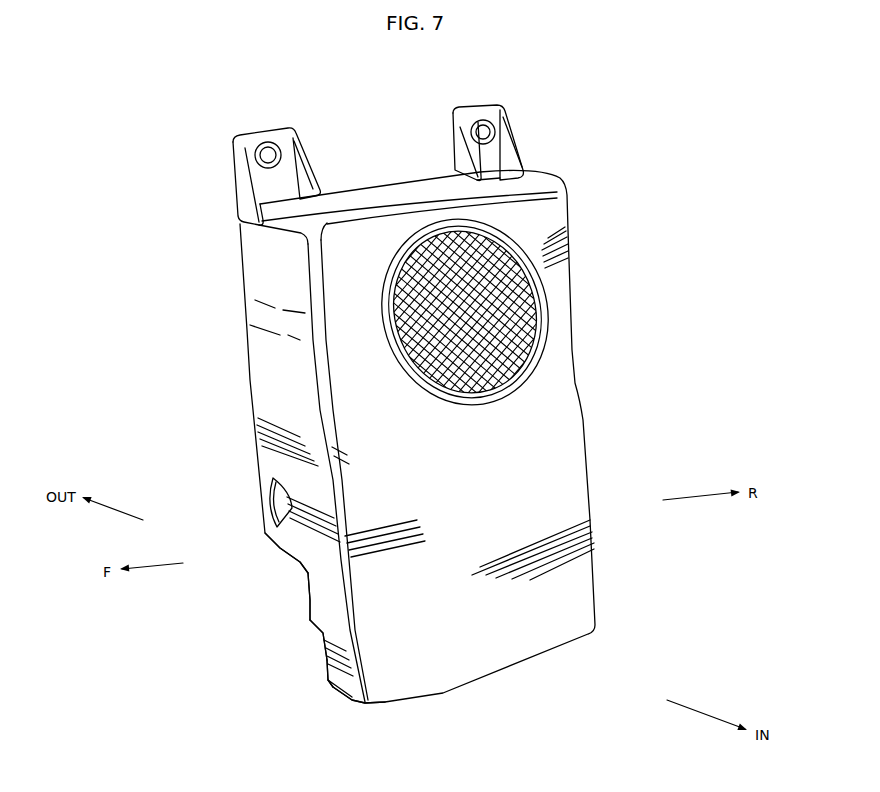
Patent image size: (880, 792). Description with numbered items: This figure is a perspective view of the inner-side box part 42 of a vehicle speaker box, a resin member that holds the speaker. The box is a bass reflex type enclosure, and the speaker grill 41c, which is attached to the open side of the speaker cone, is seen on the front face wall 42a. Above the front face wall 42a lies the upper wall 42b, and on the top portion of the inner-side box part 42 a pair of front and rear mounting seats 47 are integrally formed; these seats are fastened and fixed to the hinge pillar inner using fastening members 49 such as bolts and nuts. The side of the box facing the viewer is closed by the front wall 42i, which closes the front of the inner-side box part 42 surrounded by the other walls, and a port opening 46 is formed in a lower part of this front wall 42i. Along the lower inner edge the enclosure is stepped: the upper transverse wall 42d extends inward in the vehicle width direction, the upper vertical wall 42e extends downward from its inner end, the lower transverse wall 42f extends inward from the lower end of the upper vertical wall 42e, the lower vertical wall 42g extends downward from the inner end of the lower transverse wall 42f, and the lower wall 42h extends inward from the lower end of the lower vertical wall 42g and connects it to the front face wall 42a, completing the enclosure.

The inner-side box part 42 is at (584, 316).
The front face wall 42a is at (494, 477).
The upper wall 42b is at (380, 196).
The front wall 42i is at (268, 383).
The upper transverse wall 42d is at (281, 549).
The upper vertical wall 42e is at (308, 580).
The lower transverse wall 42f is at (312, 624).
The lower vertical wall 42g is at (324, 672).
The lower wall 42h is at (352, 702).
The speaker grill 41c is at (392, 360).
The port opening 46 is at (266, 492).
The mounting seat 47 is at (235, 178).
The fastening member 49 is at (278, 147).